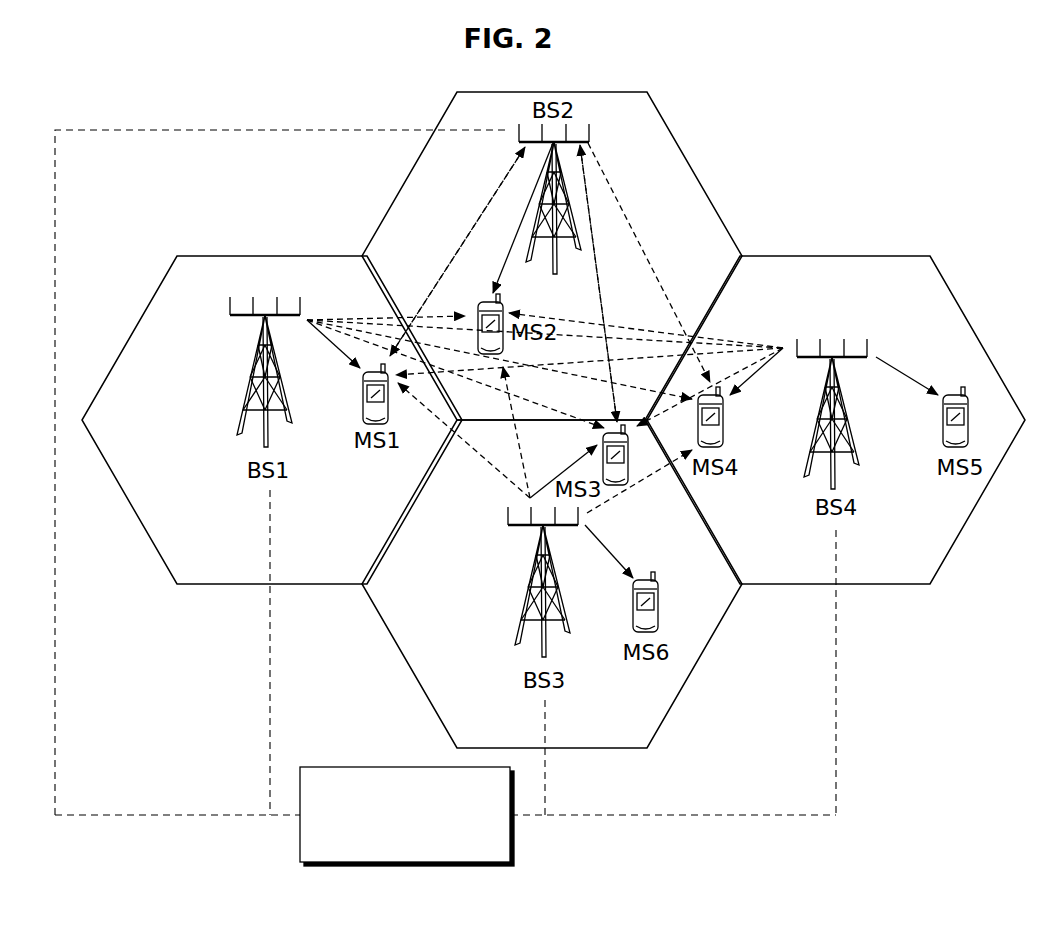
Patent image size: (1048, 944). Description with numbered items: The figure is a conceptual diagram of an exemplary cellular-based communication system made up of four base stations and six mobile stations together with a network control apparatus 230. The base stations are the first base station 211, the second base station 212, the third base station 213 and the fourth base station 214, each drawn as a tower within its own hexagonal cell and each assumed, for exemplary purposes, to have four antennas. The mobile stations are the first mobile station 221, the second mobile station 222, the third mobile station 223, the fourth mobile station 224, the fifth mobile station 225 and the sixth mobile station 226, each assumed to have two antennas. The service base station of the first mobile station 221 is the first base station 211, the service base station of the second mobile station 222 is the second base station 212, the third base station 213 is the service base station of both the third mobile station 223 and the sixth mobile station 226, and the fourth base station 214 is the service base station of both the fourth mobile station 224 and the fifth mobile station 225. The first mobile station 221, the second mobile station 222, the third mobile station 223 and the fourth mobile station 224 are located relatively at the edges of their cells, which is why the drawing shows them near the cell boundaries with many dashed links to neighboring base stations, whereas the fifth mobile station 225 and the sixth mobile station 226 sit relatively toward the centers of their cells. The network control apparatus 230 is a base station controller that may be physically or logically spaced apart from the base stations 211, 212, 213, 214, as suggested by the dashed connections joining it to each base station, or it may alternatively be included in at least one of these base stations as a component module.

The BS (1) 211 is at (243, 376).
The BS (2) 212 is at (589, 130).
The BS (3) 213 is at (524, 585).
The BS (4) 214 is at (843, 339).
The MS (1) 221 is at (363, 392).
The MS (2) 222 is at (491, 302).
The MS (3) 223 is at (628, 462).
The MS (4) 224 is at (723, 418).
The MS (5) 225 is at (943, 420).
The MS (6) 226 is at (650, 580).
The network control apparatus 230 is at (378, 767).